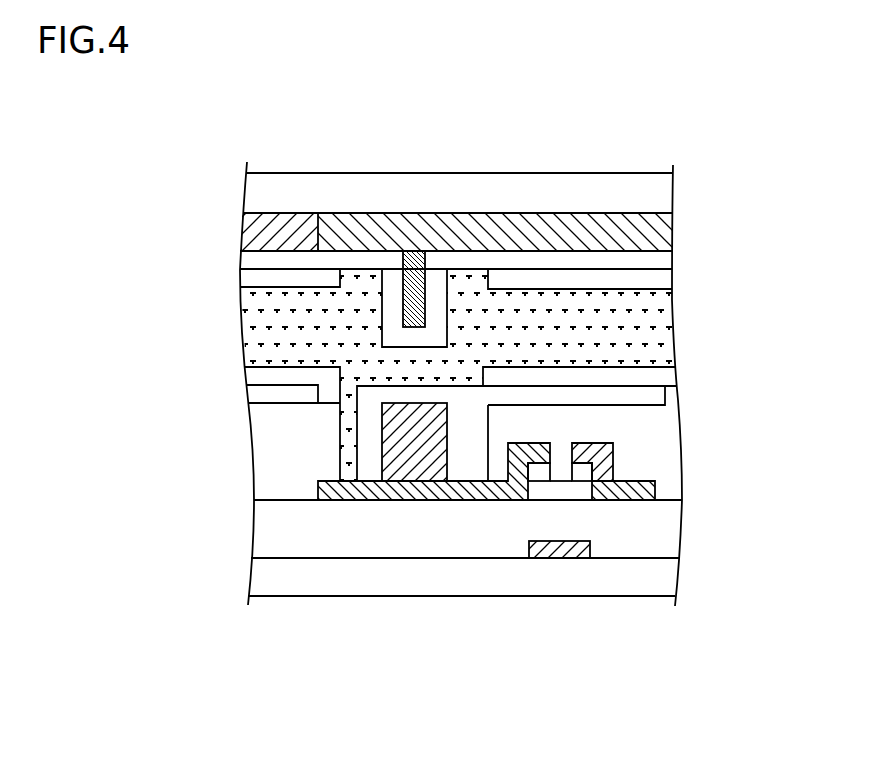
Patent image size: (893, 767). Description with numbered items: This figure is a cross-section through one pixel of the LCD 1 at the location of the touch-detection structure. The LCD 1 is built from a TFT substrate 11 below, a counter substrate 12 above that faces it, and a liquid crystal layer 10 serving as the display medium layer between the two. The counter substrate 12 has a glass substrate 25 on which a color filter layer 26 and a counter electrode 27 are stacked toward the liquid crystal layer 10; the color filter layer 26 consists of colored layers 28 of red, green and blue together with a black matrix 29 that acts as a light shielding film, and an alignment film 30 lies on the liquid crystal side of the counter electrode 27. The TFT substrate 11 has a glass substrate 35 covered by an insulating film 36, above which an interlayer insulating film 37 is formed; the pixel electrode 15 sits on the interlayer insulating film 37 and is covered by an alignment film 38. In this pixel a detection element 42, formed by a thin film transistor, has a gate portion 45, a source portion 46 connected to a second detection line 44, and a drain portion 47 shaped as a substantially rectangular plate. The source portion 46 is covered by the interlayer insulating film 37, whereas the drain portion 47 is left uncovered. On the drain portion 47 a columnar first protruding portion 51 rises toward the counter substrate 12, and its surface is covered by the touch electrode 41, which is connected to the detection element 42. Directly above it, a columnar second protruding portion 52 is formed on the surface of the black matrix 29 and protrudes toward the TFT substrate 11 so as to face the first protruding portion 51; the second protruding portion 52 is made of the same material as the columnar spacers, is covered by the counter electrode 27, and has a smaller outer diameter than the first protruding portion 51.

The LCD 1 is at (128, 155).
The liquid crystal layer 10 is at (250, 320).
The TFT substrate 11 is at (275, 597).
The counter substrate 12 is at (283, 164).
The pixel electrode 15 is at (257, 397).
The glass substrate 25 is at (662, 190).
The color filter layer 26 is at (663, 223).
The counter electrode 27 is at (658, 263).
The colored layers 28 is at (298, 215).
The black matrix 29 is at (597, 213).
The alignment film 30 is at (247, 280).
The glass substrate 35 is at (667, 578).
The insulating film 36 is at (670, 523).
The interlayer insulating film 37 is at (260, 452).
The alignment film 38 is at (260, 377).
The touch electrode 41 is at (470, 467).
The detection element 42 is at (628, 447).
The second detection line 44 is at (642, 500).
The gate portion 45 is at (548, 558).
The source portion 46 is at (603, 448).
The drain portion 47 is at (360, 483).
The first protruding portion 51 is at (412, 470).
The second protruding portion 52 is at (410, 251).